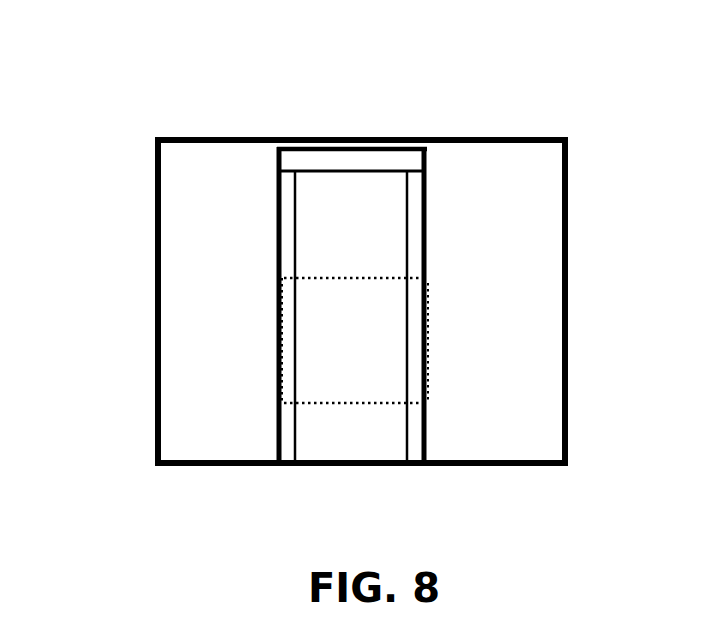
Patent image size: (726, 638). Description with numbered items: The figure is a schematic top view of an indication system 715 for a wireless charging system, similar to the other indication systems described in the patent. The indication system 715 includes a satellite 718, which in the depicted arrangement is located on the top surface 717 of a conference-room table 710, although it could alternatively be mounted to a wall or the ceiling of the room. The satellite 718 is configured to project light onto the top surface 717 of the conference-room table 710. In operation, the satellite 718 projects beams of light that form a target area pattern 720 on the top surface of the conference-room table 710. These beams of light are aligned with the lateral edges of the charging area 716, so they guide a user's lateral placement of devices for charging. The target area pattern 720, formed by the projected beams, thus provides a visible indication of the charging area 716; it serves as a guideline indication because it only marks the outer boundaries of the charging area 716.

The indication system 715 is at (459, 45).
The conference-room table 710 is at (237, 137).
The top surface 717 is at (231, 179).
The satellite 718 is at (427, 163).
The target area pattern 720 is at (278, 262).
The charging area 716 is at (428, 333).